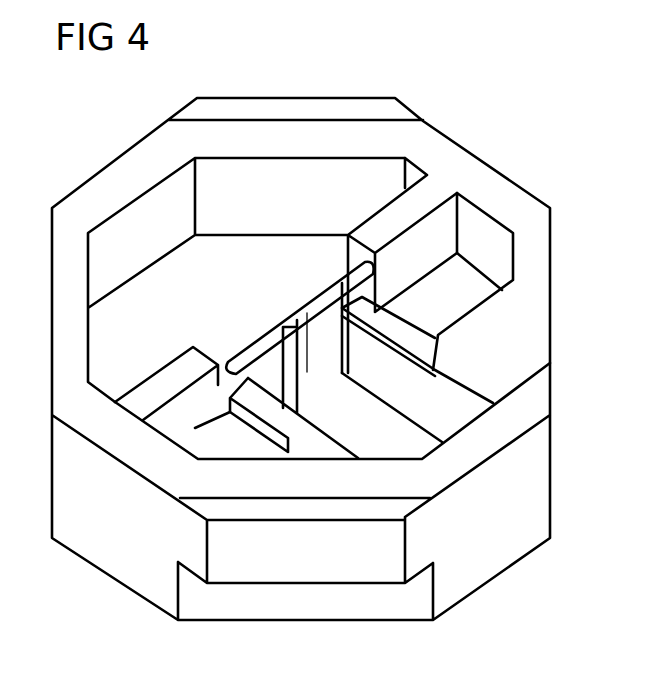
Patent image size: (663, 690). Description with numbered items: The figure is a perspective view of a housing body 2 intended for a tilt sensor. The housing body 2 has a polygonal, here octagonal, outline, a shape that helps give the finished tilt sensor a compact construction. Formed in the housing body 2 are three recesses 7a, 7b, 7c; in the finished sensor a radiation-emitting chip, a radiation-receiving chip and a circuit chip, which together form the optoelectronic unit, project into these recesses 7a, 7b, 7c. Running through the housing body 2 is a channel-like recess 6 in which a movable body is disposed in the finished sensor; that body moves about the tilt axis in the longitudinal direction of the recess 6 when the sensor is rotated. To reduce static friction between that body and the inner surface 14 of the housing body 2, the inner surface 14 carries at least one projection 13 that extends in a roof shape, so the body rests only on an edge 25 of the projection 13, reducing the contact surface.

The housing body 2 is at (528, 126).
The channel-like recess 6 is at (402, 450).
The recess 7a is at (463, 303).
The recess 7b is at (157, 487).
The recess 7c is at (163, 288).
The projection 13 is at (293, 320).
The inner surface 14 is at (323, 313).
The edge 25 is at (298, 372).